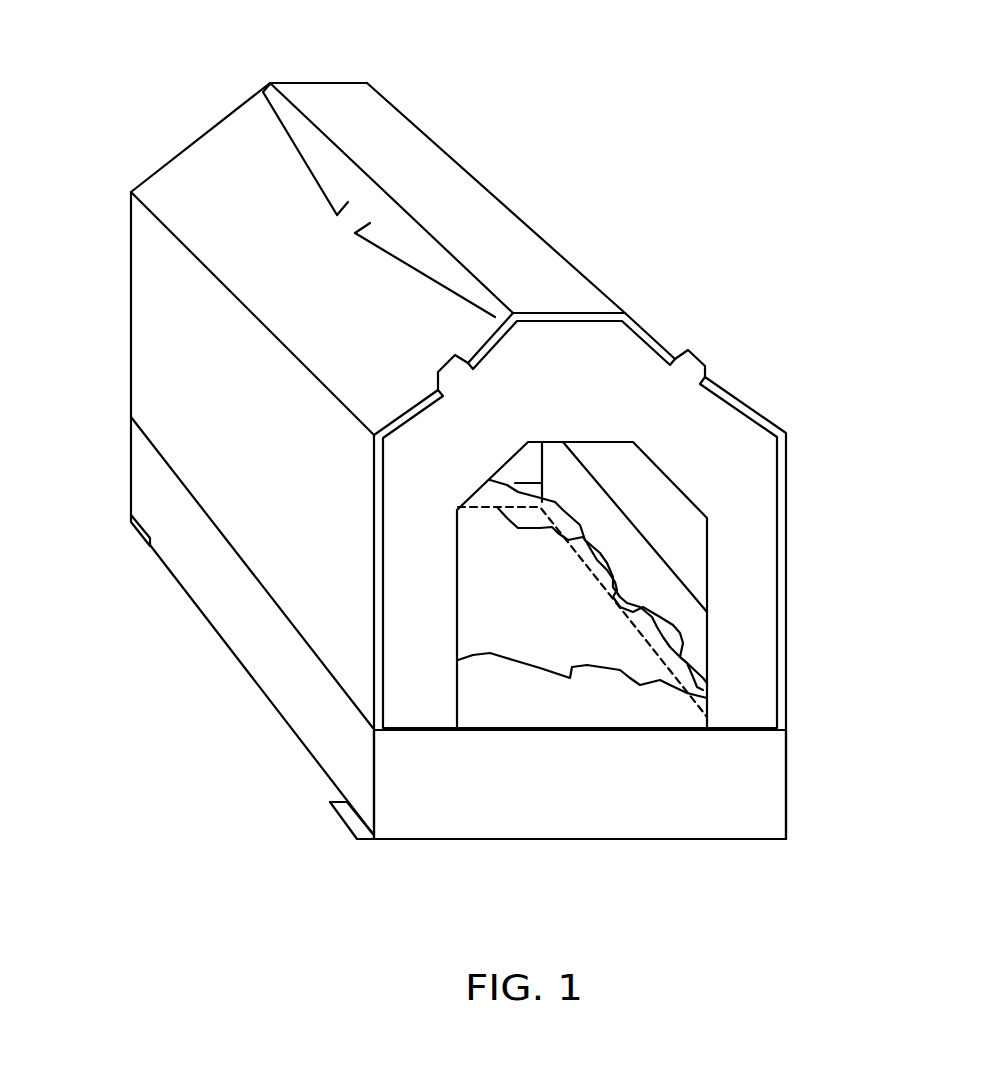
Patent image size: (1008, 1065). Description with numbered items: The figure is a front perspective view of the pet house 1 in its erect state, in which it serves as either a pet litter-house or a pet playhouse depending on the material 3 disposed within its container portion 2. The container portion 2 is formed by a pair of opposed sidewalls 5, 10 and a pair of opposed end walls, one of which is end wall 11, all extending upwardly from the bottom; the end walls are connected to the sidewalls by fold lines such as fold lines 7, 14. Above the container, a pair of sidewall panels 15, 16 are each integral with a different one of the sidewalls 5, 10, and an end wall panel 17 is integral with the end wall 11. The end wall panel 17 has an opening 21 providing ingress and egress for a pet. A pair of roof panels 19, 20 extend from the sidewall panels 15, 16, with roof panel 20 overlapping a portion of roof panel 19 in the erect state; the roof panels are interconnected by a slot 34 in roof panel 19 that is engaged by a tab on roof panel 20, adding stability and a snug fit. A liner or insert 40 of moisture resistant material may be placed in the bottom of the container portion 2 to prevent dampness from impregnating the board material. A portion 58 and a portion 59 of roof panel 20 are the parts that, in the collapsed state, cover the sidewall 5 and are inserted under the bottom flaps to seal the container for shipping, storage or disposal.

The pet house 1 is at (716, 247).
The container portion 2 is at (797, 808).
The material 3 is at (543, 593).
The sidewall 5 is at (208, 620).
The fold line 7 is at (787, 740).
The sidewall 10 is at (577, 485).
The end wall 11 is at (730, 810).
The fold line 14 is at (373, 797).
The sidewall panel 15 is at (786, 540).
The sidewall panel 16 is at (150, 330).
The end wall panel 17 is at (750, 633).
The roof panel 19 is at (183, 180).
The roof panel 20 is at (523, 193).
The opening 21 is at (622, 702).
The slot 34 is at (351, 225).
The liner or insert 40 is at (643, 603).
The portion of roof panel 58 is at (362, 115).
The portion of roof panel 59 is at (297, 130).